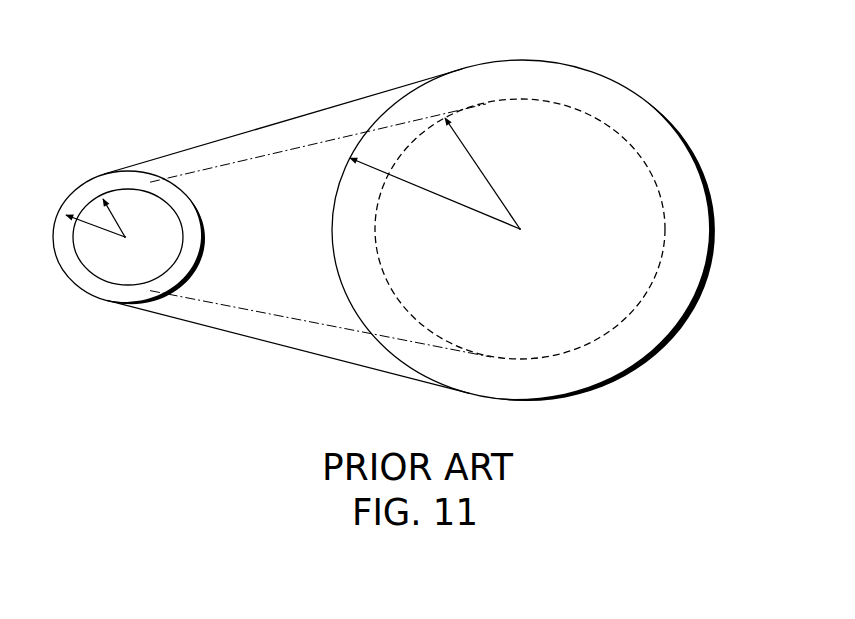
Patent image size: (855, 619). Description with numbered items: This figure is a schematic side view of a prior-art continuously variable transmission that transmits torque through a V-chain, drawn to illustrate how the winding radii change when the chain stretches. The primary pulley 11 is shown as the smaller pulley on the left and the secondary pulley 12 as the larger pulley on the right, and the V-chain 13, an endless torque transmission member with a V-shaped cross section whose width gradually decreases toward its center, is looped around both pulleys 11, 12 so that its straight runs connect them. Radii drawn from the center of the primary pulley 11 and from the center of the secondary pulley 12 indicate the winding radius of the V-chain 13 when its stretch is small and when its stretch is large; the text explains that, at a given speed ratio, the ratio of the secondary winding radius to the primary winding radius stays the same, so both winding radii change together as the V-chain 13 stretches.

The primary pulley 11 is at (203, 232).
The secondary pulley 12 is at (332, 252).
The V-chain 13 is at (243, 312).